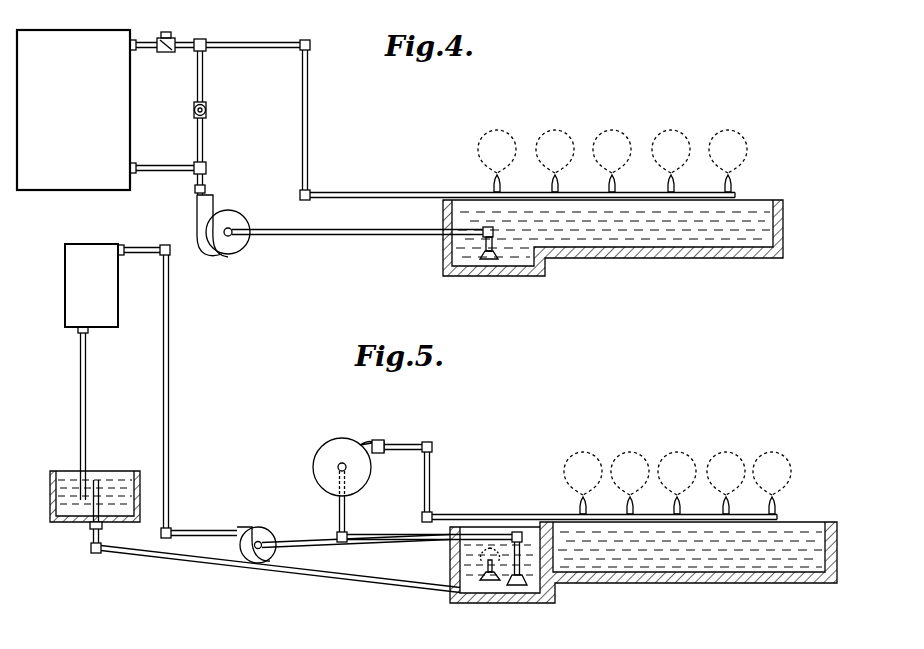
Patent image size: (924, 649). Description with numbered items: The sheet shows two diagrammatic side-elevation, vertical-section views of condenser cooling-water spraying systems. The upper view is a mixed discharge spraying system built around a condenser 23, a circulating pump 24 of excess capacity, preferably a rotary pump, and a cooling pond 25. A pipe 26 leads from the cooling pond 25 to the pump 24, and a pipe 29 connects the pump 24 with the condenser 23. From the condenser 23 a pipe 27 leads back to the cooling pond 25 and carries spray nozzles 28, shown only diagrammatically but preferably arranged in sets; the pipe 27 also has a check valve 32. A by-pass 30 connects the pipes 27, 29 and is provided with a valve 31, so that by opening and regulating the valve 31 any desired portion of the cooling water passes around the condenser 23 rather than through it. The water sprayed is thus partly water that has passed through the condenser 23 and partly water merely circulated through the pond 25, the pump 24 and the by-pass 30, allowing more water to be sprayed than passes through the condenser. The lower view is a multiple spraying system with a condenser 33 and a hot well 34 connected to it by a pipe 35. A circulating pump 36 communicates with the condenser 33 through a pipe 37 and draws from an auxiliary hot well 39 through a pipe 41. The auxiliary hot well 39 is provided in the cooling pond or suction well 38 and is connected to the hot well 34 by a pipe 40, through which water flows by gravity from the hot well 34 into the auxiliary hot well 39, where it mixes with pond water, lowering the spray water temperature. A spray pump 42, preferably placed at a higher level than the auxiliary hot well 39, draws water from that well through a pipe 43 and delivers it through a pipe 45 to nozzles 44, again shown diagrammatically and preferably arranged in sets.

In FIG. 4, the condenser 23 is at (119, 100).
In FIG. 4, the circulating pump 24 is at (240, 247).
In FIG. 4, the cooling pond 25 is at (650, 258).
In FIG. 4, the pipe leading from the cooling pond to the pump 26 is at (364, 236).
In FIG. 4, the pipe leading from the condenser to the cooling pond 27 is at (309, 105).
In FIG. 4, the nozzles 28 is at (493, 189).
In FIG. 4, the pipe 29 is at (163, 173).
In FIG. 4, the by-pass 30 is at (203, 137).
In FIG. 4, the valve 31 is at (206, 108).
In FIG. 4, the check valve 32 is at (170, 38).
In FIG. 5, the condenser 33 is at (103, 318).
In FIG. 5, the hot well 34 is at (140, 469).
In FIG. 5, the pipe 35 is at (87, 382).
In FIG. 5, the circulating pump 36 is at (262, 530).
In FIG. 5, the pipe 37 is at (170, 397).
In FIG. 5, the cooling pond or suction well 38 is at (706, 585).
In FIG. 5, the auxiliary hot well 39 is at (500, 595).
In FIG. 5, the pipe 40 is at (318, 580).
In FIG. 5, the pipe 41 is at (309, 540).
In FIG. 5, the spray pump 42 is at (331, 448).
In FIG. 5, the pipe 43 is at (346, 510).
In FIG. 5, the nozzles 44 is at (611, 486).
In FIG. 5, the pipe 45 is at (431, 474).